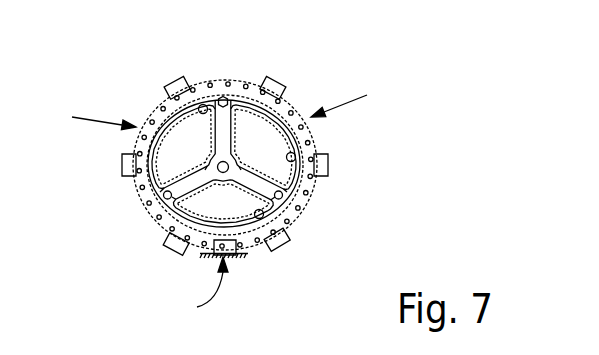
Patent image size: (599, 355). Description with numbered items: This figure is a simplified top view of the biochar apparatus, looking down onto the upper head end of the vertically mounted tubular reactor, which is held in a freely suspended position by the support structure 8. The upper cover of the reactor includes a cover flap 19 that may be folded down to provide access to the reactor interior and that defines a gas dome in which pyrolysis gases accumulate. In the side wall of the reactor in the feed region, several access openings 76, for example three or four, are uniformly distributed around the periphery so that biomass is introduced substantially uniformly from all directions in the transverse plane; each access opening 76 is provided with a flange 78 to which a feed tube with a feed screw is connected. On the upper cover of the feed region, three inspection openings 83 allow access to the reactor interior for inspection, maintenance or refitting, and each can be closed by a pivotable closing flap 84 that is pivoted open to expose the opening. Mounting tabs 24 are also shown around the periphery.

The support structure 8 is at (168, 100).
The cover flap 19 is at (305, 197).
The mounting tab 24 is at (180, 77).
The access opening 76 is at (218, 200).
The flange 78 is at (157, 103).
The inspection opening 83 is at (204, 106).
The closing flap 84 is at (274, 127).